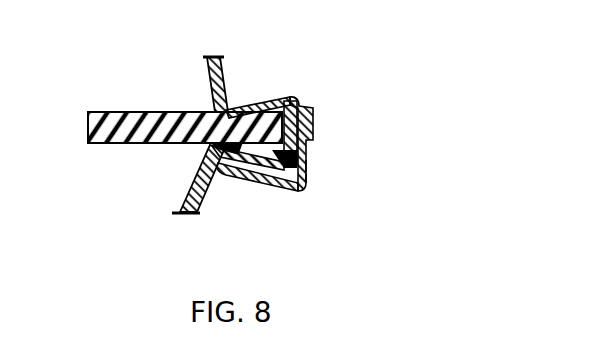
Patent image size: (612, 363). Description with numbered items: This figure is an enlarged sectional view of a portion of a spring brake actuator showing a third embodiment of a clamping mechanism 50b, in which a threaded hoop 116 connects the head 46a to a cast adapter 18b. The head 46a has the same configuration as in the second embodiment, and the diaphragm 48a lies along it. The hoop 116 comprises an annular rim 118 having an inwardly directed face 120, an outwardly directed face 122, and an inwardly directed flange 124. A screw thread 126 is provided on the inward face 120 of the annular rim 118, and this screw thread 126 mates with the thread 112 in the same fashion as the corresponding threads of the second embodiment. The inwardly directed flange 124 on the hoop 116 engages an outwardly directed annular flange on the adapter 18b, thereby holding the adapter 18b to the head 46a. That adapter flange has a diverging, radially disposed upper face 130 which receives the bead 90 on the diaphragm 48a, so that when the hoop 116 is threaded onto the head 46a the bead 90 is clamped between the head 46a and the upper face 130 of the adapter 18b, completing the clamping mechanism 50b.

The panel 48a is at (142, 123).
The head 46a is at (225, 71).
The bead 90 is at (275, 100).
The inwardly directed face 120 is at (290, 100).
The clamping mechanism 50b is at (340, 143).
The thread 112 is at (311, 128).
The screw thread 126 is at (310, 150).
The annular rim 118 is at (307, 172).
The outwardly directed face 122 is at (306, 178).
The threaded hoop 116 is at (296, 193).
The inwardly directed flange 124 is at (238, 170).
The upper face 130 is at (216, 156).
The cast adapter 18b is at (164, 192).